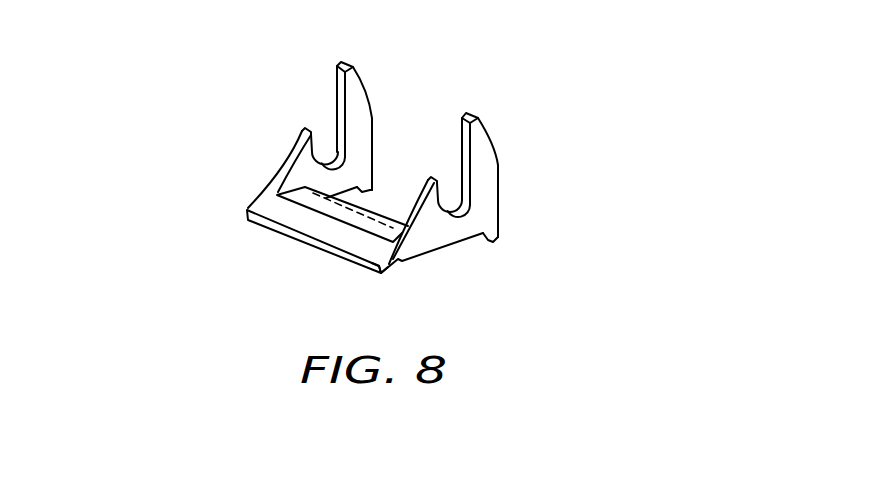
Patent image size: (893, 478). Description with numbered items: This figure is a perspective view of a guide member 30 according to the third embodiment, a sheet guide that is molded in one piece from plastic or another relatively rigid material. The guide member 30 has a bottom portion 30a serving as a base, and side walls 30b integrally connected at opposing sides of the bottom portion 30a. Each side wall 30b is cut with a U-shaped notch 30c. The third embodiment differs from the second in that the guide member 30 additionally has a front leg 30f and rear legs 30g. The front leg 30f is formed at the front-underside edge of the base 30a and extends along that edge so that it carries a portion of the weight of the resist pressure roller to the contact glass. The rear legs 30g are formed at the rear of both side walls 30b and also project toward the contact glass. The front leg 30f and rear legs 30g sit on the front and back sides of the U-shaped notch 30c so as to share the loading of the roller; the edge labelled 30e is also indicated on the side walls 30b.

The guide member 30 is at (486, 181).
The bottom portion 30a is at (340, 206).
The side wall 30b is at (356, 71).
The U-shaped notch 30c is at (325, 145).
The inclined leg 30e is at (282, 164).
The front leg 30f is at (383, 271).
The rear leg 30g is at (496, 243).